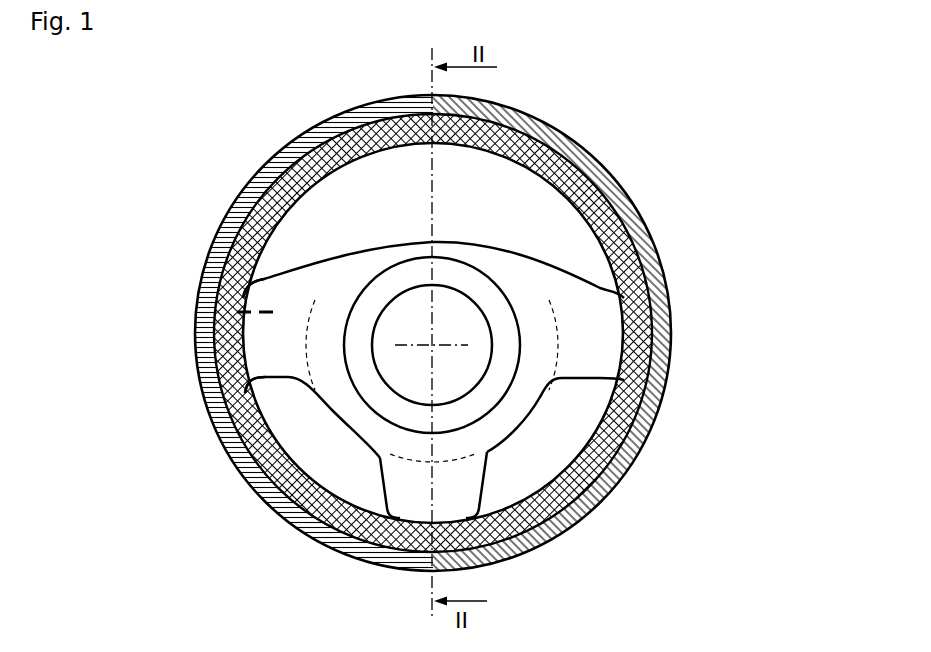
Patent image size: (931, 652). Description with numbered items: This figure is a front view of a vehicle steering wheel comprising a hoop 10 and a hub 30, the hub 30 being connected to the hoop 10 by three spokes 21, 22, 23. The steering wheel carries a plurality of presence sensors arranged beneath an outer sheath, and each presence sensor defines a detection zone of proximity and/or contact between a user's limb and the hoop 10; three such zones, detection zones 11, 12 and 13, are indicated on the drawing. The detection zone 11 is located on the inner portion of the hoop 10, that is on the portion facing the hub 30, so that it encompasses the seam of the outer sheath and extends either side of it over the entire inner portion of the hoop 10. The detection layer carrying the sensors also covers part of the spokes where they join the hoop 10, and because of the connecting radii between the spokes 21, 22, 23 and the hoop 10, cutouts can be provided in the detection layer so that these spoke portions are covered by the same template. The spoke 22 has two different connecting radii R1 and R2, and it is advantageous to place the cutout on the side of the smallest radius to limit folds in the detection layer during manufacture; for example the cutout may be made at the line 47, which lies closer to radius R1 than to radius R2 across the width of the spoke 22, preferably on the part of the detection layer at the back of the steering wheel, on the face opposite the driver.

The hoop 10 is at (385, 333).
The detection zone 11 is at (433, 333).
The detection zone 12 is at (398, 333).
The detection zone 13 is at (433, 333).
The spoke 21 is at (405, 488).
The spoke 22 is at (270, 350).
The spoke 23 is at (610, 347).
The hub 30 is at (548, 359).
The line 47 is at (189, 336).
The connecting radius R1 is at (290, 271).
The connecting radius R2 is at (285, 411).